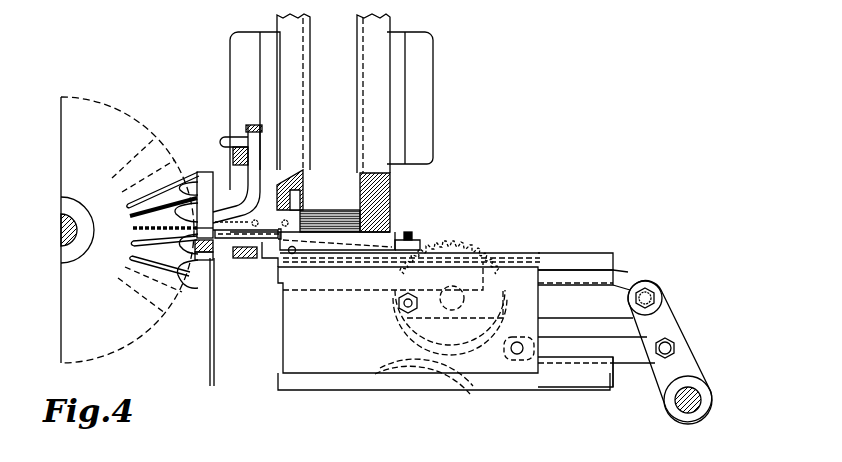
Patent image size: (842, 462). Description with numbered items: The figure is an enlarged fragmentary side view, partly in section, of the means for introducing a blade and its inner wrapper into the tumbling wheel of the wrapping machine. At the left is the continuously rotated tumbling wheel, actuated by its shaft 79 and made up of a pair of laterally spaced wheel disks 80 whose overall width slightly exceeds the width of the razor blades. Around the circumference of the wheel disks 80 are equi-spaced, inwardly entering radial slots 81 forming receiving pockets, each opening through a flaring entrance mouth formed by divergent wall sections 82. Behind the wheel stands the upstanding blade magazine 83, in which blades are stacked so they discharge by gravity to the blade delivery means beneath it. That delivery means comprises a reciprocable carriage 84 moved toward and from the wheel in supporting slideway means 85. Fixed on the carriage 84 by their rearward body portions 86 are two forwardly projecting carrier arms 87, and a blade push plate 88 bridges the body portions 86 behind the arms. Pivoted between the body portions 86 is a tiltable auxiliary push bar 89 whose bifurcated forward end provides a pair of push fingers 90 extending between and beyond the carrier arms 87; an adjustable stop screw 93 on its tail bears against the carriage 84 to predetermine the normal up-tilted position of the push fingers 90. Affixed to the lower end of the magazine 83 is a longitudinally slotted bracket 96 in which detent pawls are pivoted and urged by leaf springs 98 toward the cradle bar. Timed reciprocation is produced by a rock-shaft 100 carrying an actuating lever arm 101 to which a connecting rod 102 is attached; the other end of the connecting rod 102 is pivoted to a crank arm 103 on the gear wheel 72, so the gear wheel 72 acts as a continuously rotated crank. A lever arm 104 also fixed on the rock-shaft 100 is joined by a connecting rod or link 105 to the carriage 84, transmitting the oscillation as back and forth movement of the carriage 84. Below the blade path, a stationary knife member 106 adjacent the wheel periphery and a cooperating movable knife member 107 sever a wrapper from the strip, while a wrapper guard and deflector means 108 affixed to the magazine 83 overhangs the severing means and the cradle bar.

The gear wheel 72 is at (462, 242).
The shaft 79 is at (62, 234).
The wheel disks 80 is at (129, 112).
The radial slots 81 is at (132, 245).
The divergent wall sections 82 is at (171, 292).
The blade magazine 83 is at (357, 78).
The carriage 84 is at (292, 333).
The slideway means 85 is at (568, 272).
The body portions 86 is at (388, 226).
The carrier arms 87 is at (247, 260).
The blade push plate 88 is at (327, 226).
The auxiliary push bar 89 is at (418, 249).
The push fingers 90 is at (216, 222).
The adjustable stop screw 93 is at (409, 236).
The slotted bracket 96 is at (232, 226).
The leaf springs 98 is at (260, 208).
The rock-shaft 100 is at (700, 400).
The actuating lever arm 101 is at (664, 320).
The connecting rod 102 is at (626, 275).
The crank arm 103 is at (400, 306).
The lever arm 104 is at (680, 358).
The connecting rod or link 105 is at (630, 358).
The stationary knife member 106 is at (210, 305).
The movable knife member 107 is at (232, 253).
The wrapper guard and deflector means 108 is at (208, 220).